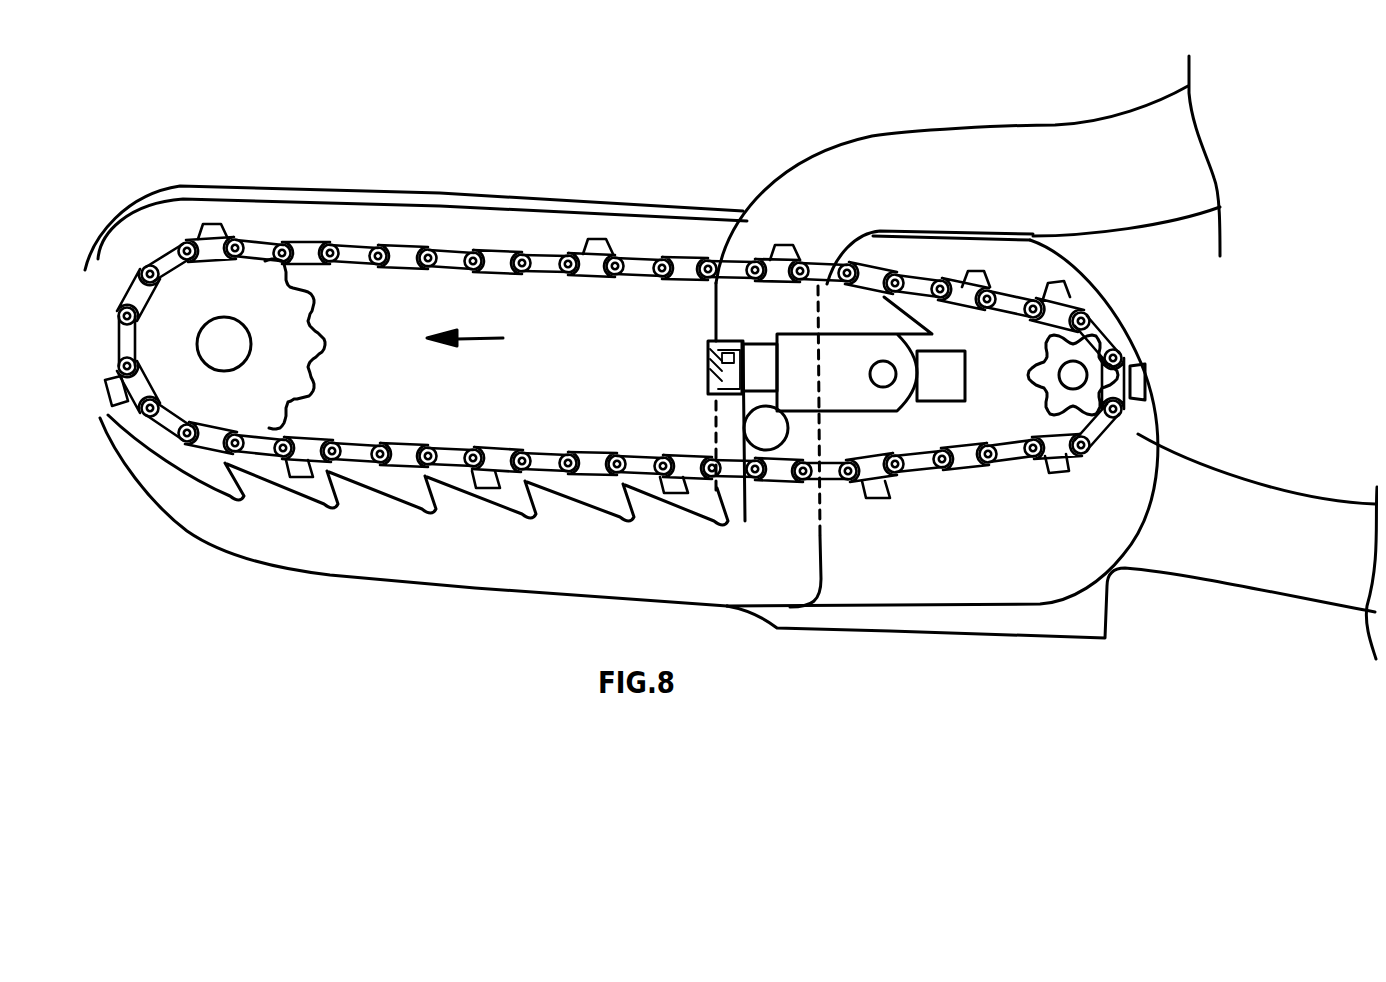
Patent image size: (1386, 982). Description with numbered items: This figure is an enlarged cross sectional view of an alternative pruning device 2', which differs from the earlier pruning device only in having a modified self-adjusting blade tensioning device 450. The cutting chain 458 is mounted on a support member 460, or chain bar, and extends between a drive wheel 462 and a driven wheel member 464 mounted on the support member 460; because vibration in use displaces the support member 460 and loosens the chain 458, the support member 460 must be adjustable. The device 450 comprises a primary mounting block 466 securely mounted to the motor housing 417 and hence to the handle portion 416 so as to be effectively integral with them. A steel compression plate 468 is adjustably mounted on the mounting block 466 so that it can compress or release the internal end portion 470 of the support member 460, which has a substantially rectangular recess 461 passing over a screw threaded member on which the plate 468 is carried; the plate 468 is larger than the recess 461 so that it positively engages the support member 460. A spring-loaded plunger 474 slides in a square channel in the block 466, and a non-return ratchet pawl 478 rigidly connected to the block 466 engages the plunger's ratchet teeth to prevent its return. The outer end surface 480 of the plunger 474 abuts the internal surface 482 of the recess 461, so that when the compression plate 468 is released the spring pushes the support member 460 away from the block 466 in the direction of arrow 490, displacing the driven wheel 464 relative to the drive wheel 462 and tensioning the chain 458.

The pruning device 2' is at (417, 651).
The handle portion 416 is at (1237, 530).
The motor housing 417 is at (1140, 433).
The blade tensioning device 450 is at (902, 438).
The chain 458 is at (320, 447).
The support member 460 is at (462, 420).
The rectangular recess 461 is at (766, 450).
The drive wheel 462 is at (1083, 337).
The driven wheel member 464 is at (253, 288).
The primary mounting block 466 is at (947, 380).
The compression plate 468 is at (825, 277).
The internal end portion 470 is at (886, 428).
The plunger 474 is at (708, 370).
The non-return ratchet pawl 478 is at (722, 378).
The outer end surface 480 is at (712, 373).
The internal surface 482 is at (718, 337).
The arrow 490 is at (471, 324).